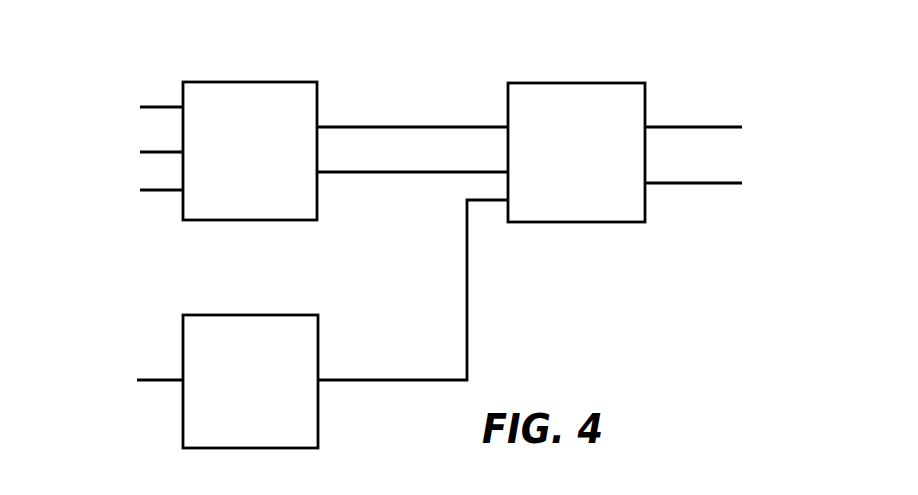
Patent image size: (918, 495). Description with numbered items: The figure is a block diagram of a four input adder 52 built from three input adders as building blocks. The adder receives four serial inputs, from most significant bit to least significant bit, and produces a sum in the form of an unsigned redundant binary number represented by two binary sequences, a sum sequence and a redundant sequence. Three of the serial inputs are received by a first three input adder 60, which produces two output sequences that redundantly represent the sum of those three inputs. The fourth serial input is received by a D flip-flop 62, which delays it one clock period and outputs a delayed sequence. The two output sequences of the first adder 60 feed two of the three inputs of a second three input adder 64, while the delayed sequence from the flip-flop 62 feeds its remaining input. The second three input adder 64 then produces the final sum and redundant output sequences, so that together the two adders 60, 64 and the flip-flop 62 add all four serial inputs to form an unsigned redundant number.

The arithmetic circuit 52 is at (439, 63).
The three input adder 60 is at (250, 82).
The D flip-flop 62 is at (275, 315).
The three input adder 64 is at (597, 83).